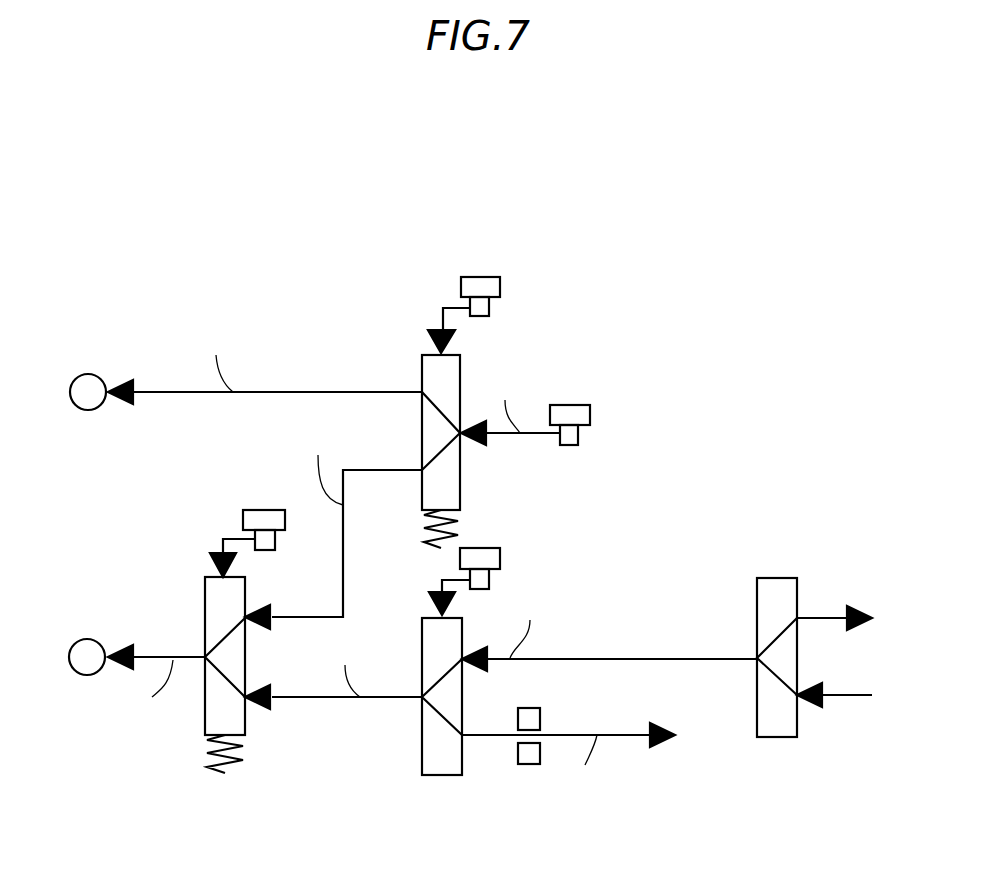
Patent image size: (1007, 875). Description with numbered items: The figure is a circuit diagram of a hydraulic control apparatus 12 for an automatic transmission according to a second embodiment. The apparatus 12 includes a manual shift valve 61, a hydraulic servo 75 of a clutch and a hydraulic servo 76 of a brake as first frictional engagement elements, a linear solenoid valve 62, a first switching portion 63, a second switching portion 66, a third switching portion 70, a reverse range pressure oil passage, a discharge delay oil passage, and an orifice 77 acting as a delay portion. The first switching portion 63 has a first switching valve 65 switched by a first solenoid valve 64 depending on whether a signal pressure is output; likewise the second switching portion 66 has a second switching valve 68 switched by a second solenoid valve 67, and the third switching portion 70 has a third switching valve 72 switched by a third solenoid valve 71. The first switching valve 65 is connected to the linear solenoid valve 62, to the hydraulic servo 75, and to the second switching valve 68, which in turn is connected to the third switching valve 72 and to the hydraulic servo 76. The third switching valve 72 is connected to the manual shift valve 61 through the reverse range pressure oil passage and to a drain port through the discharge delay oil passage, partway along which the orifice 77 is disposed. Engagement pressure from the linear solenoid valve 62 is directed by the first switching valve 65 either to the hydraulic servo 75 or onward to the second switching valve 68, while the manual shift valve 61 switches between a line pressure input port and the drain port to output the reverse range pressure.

The hydraulic control apparatus 12 is at (395, 212).
The manual shift valve 61 is at (797, 602).
The linear solenoid valve 62 is at (570, 405).
The first switching portion 63 is at (387, 255).
The first solenoid valve 64 is at (461, 290).
The first switching valve 65 is at (430, 378).
The second switching portion 66 is at (265, 463).
The second solenoid valve 67 is at (260, 522).
The second switching valve 68 is at (213, 588).
The third switching portion 70 is at (400, 525).
The third solenoid valve 71 is at (470, 562).
The third switching valve 72 is at (430, 652).
The hydraulic servo 75 is at (107, 382).
The hydraulic servo 76 is at (102, 642).
The orifice 77 is at (540, 718).